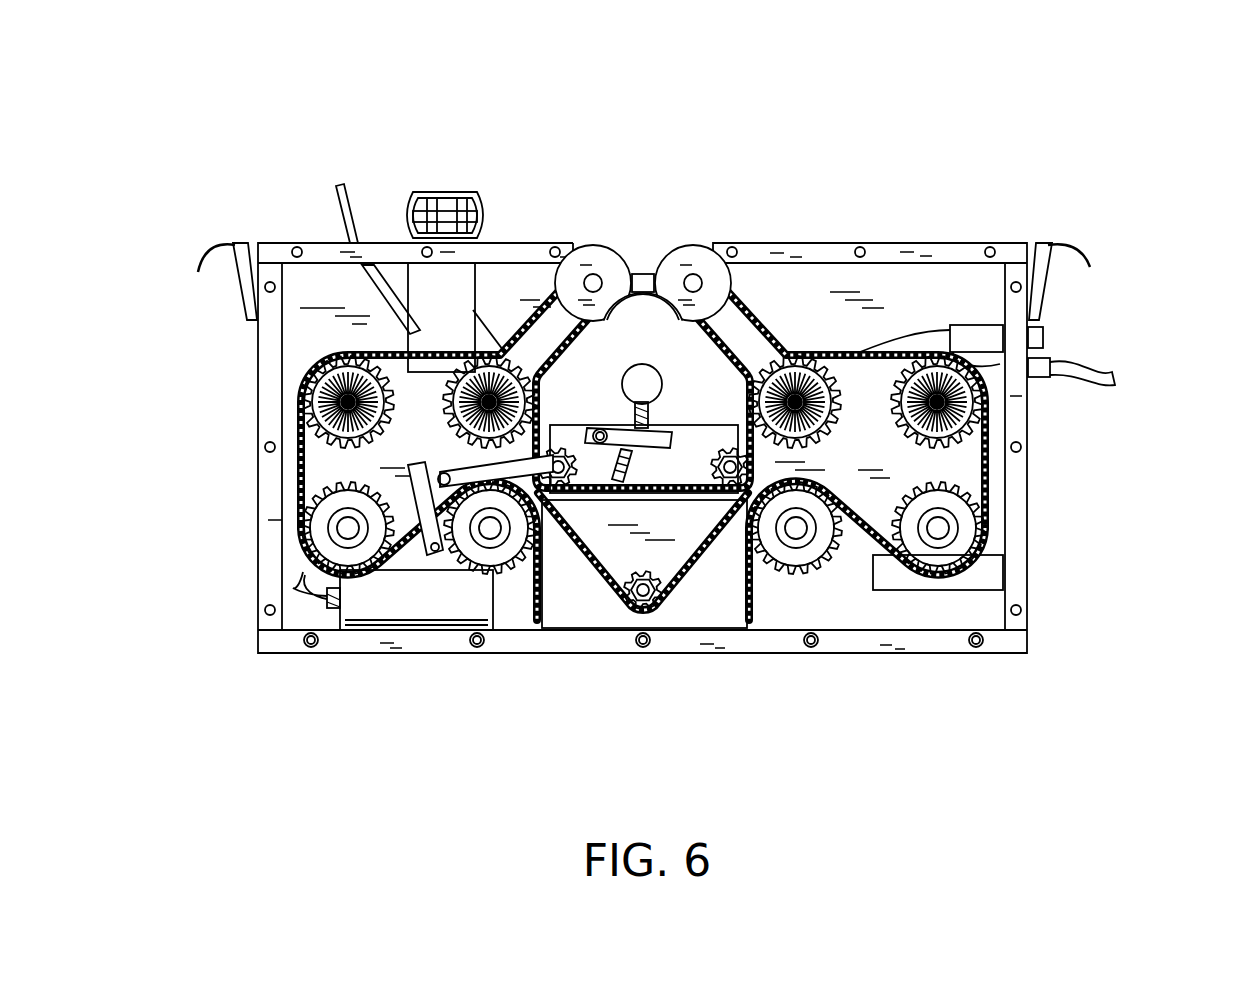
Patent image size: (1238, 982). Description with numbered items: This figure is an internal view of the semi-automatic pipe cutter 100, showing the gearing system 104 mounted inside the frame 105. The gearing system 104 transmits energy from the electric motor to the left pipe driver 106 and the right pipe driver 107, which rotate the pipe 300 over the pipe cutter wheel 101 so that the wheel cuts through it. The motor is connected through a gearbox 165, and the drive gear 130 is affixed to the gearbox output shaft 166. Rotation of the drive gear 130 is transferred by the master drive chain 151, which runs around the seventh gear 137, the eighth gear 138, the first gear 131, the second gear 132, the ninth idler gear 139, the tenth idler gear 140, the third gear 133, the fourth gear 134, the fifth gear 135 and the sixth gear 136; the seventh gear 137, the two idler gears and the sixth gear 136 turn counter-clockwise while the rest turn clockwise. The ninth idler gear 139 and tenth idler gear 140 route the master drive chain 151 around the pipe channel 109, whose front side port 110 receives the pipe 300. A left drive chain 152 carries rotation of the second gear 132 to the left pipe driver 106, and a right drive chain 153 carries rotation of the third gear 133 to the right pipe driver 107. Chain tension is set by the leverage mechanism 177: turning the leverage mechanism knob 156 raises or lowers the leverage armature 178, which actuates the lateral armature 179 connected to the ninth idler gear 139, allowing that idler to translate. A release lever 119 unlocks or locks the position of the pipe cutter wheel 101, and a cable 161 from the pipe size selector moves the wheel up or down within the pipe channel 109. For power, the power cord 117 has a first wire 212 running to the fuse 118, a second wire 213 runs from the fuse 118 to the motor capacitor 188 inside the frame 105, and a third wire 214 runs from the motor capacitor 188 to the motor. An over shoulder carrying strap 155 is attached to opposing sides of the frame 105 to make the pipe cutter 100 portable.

The semi-automatic pipe cutter 100 is at (210, 138).
The pipe cutter wheel 101 is at (647, 363).
The gearing system 104 is at (863, 410).
The frame 105 is at (1030, 467).
The left pipe driver 106 is at (584, 262).
The right pipe driver 107 is at (696, 250).
The pipe channel 109 is at (690, 327).
The front side port 110 is at (663, 335).
The power cord 117 is at (1113, 370).
The fuse 118 is at (1043, 338).
The release lever 119 is at (342, 210).
The drive gear 130 is at (660, 588).
The first gear 131 is at (325, 398).
The second gear 132 is at (440, 360).
The third gear 133 is at (810, 395).
The fourth gear 134 is at (940, 402).
The fifth gear 135 is at (960, 530).
The sixth gear 136 is at (807, 542).
The seventh gear 137 is at (492, 537).
The eighth gear 138 is at (347, 530).
The ninth idler gear 139 is at (563, 437).
The tenth idler gear 140 is at (723, 450).
The master drive chain 151 is at (987, 480).
The left drive chain 152 is at (533, 330).
The right drive chain 153 is at (757, 345).
The over shoulder carrying strap 155 is at (243, 278).
The leverage mechanism knob 156 is at (438, 194).
The cable 161 is at (632, 455).
The gearbox 165 is at (567, 603).
The gearbox output shaft 166 is at (637, 600).
The leverage mechanism 177 is at (460, 287).
The leverage armature 178 is at (433, 403).
The lateral armature 179 is at (493, 470).
The motor capacitor 188 is at (415, 603).
The first wire 212 is at (1000, 363).
The second wire 213 is at (968, 352).
The third wire 214 is at (310, 593).
The pipe 300 is at (636, 305).